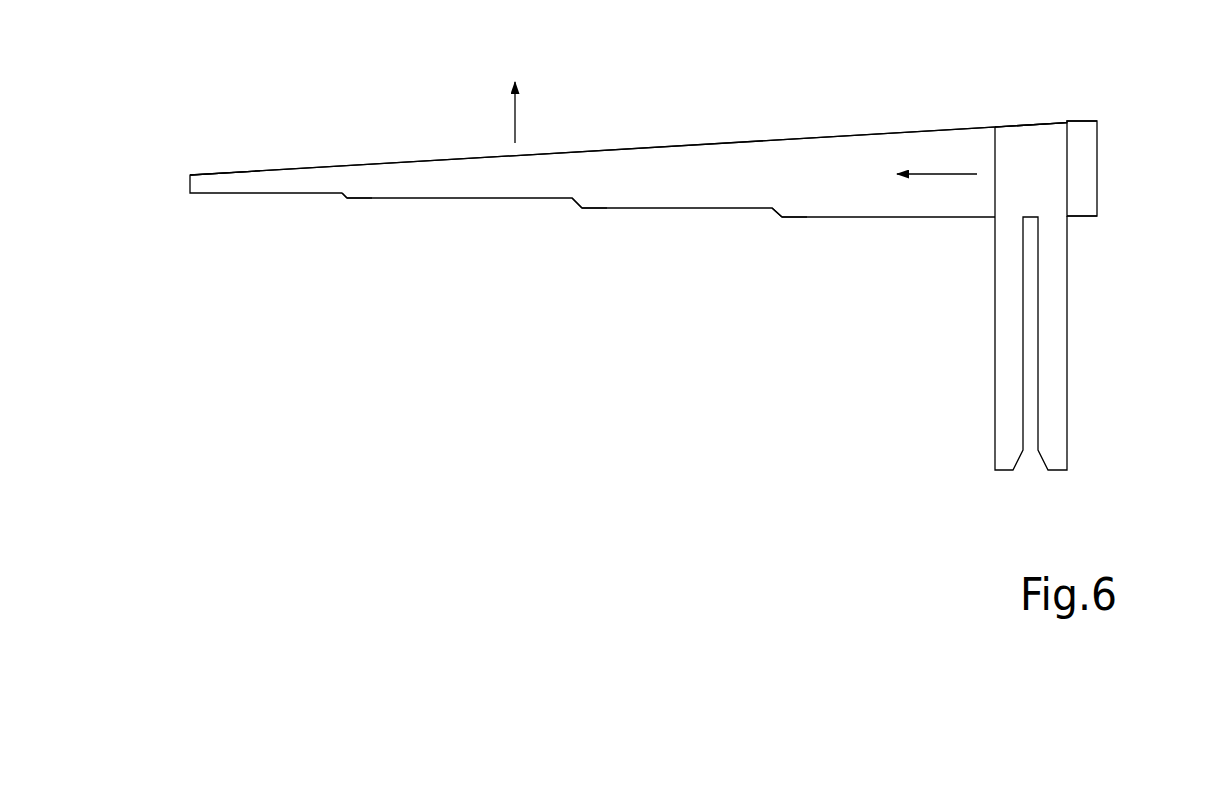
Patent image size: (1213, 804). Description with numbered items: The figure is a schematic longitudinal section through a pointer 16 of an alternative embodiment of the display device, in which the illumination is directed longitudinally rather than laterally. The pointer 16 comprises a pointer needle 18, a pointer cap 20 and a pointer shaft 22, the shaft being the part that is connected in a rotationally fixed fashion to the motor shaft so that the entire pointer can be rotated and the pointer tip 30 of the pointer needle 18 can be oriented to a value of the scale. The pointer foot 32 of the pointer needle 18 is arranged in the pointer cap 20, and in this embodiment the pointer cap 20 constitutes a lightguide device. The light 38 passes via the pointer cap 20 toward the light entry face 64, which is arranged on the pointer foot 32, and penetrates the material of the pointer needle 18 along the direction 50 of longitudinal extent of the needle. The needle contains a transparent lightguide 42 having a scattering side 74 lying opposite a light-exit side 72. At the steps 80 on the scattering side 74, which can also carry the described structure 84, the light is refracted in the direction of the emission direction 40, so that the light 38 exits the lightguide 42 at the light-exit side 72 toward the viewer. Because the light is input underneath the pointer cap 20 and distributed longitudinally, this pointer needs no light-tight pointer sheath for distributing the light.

The pointer 16 is at (683, 286).
The pointer needle 18 is at (668, 324).
The pointer cap 20 is at (1088, 155).
The pointer shaft 22 is at (996, 470).
The pointer tip 30 is at (203, 170).
The pointer foot 32 is at (1048, 102).
The light 38 is at (1084, 232).
The emission direction 40 is at (515, 118).
The lightguide 42 is at (743, 157).
The direction of longitudinal extent 50 is at (935, 174).
The light entry face 64 is at (995, 157).
The light-exit side 72 is at (443, 158).
The scattering side 74 is at (478, 233).
The steps 80 is at (343, 203).
The structure 84 is at (347, 200).